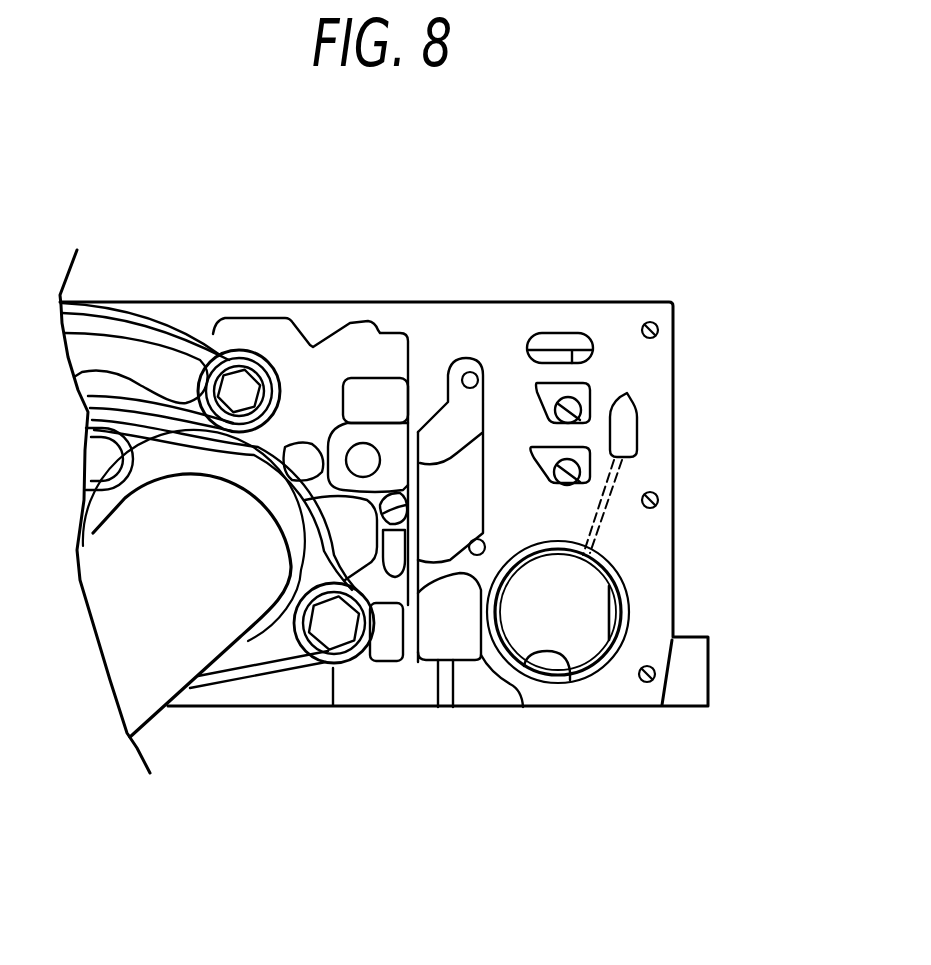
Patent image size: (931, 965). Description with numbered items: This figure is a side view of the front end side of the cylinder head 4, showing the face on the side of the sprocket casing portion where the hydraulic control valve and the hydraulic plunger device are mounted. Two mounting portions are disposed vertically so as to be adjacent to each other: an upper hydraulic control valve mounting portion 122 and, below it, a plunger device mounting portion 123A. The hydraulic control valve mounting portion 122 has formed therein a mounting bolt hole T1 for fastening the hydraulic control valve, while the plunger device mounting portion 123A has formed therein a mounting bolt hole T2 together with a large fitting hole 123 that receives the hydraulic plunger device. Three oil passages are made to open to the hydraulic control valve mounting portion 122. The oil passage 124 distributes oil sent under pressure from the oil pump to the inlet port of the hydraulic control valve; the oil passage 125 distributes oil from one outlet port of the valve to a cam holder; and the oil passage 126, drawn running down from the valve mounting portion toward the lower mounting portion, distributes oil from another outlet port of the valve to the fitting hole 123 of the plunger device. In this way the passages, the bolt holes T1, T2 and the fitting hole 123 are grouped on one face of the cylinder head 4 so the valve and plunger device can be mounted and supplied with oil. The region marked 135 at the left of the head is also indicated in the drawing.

The cylinder head 4 is at (397, 312).
The hydraulic control valve mounting portion 122 is at (627, 328).
The fitting hole 123 is at (570, 680).
The plunger device mounting portion 123A is at (597, 690).
The oil passage 124 is at (590, 477).
The oil passage 125 is at (582, 423).
The oil passage 126 is at (610, 525).
The combustion chamber recess 135 is at (163, 667).
The mounting bolt hole T1 is at (472, 372).
The mounting bolt hole T2 is at (477, 555).